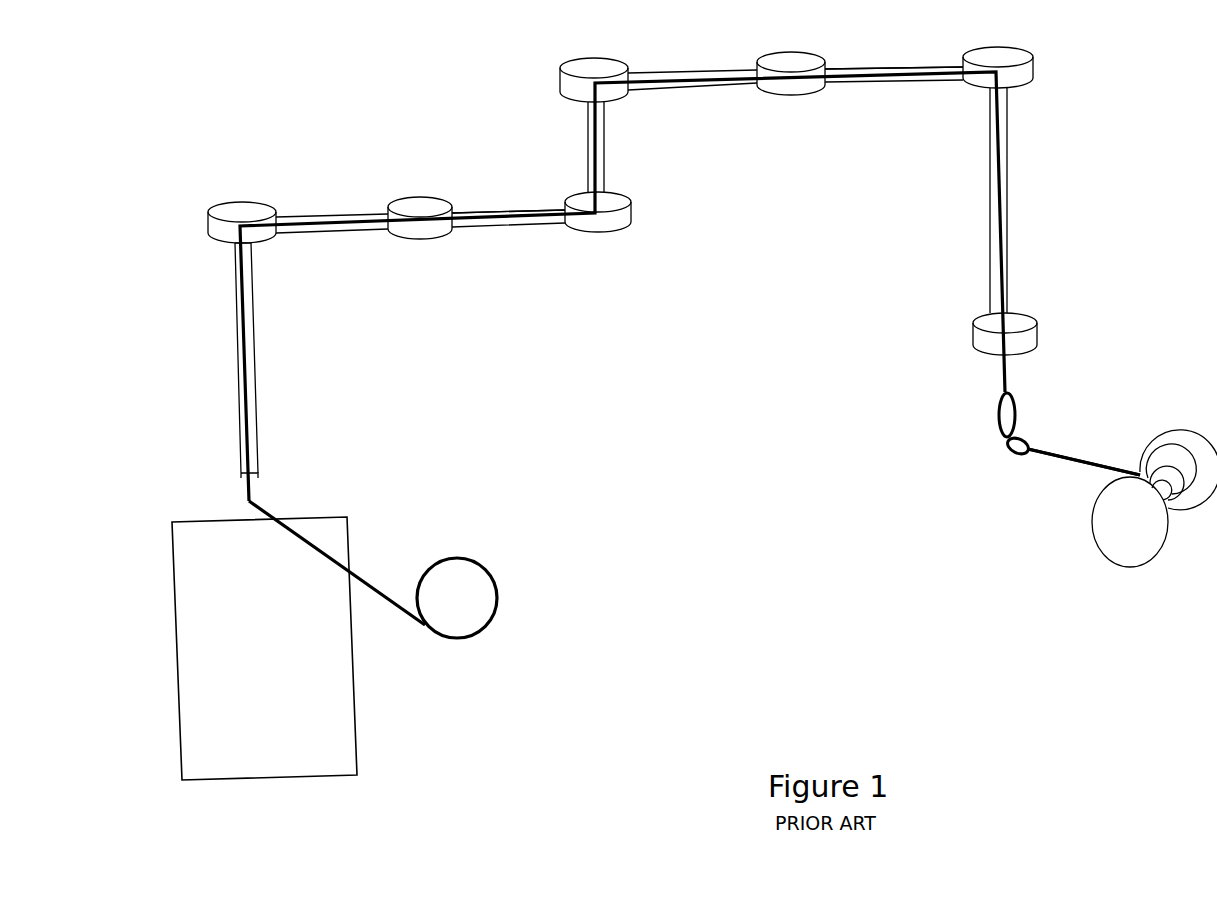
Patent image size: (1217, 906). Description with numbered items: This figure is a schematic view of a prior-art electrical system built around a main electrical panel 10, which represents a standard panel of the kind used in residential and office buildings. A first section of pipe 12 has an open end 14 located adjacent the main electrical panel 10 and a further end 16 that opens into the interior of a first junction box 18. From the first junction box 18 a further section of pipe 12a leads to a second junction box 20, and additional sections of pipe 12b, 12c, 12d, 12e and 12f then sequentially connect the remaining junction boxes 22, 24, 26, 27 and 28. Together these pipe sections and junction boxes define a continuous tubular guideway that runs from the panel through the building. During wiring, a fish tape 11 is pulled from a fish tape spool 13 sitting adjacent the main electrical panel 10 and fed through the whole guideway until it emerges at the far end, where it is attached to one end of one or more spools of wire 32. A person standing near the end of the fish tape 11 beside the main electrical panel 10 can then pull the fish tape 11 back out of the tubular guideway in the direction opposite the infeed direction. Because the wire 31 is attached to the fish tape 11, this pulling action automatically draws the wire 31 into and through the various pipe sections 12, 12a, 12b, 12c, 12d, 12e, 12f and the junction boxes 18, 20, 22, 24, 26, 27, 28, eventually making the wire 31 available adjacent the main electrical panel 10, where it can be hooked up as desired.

The main electrical panel 10 is at (343, 716).
The fish tape 11 is at (373, 580).
The first section of pipe 12 is at (621, 248).
The further section of pipe 12a is at (338, 215).
The further section of pipe 12b is at (503, 230).
The further section of pipe 12c is at (606, 146).
The further section of pipe 12d is at (695, 75).
The further section of pipe 12e is at (903, 82).
The further section of pipe 12f is at (1010, 196).
The fish tape spool 13 is at (495, 583).
The open end 14 is at (243, 475).
The further end 16 is at (230, 246).
The first junction box 18 is at (250, 206).
The second junction box 20 is at (418, 233).
The junction box 22 is at (632, 214).
The junction box 24 is at (572, 66).
The junction box 26 is at (805, 55).
The junction box 27 is at (1030, 65).
The junction box 28 is at (1037, 338).
The wire 31 is at (1082, 470).
The spool of wire 32 is at (1112, 547).